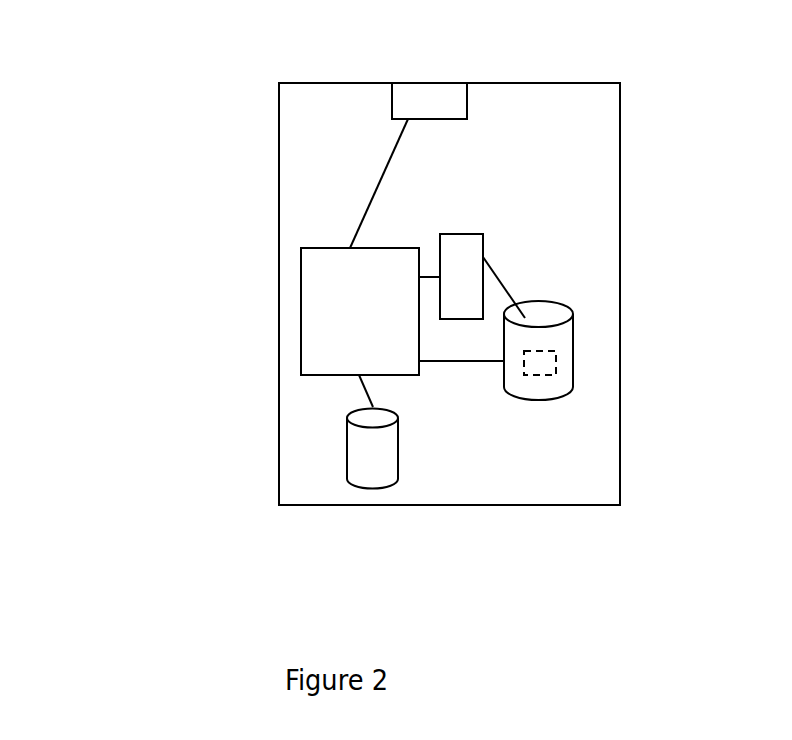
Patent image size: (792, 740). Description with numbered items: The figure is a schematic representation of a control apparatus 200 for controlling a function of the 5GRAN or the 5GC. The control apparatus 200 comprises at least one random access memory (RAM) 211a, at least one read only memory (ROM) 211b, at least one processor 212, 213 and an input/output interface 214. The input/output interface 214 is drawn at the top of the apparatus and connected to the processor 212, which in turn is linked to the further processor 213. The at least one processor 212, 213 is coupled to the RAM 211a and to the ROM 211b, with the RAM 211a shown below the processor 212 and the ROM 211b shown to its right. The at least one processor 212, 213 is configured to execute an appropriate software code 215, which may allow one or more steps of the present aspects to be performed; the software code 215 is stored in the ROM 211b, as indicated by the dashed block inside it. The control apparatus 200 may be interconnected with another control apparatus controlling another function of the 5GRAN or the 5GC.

The control apparatus 200 is at (262, 76).
The input/output interface 214 is at (435, 102).
The processor 213 is at (450, 257).
The processor 212 is at (301, 339).
The random access memory (RAM) 211a is at (347, 446).
The read only memory (ROM) 211b is at (573, 383).
The software code 215 is at (552, 355).